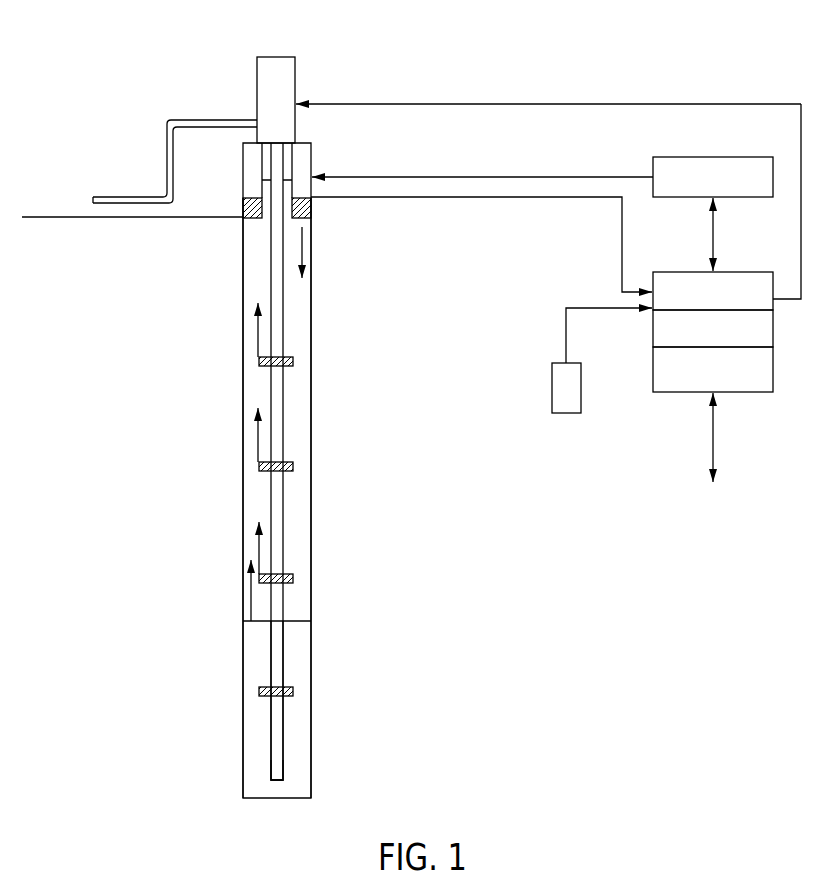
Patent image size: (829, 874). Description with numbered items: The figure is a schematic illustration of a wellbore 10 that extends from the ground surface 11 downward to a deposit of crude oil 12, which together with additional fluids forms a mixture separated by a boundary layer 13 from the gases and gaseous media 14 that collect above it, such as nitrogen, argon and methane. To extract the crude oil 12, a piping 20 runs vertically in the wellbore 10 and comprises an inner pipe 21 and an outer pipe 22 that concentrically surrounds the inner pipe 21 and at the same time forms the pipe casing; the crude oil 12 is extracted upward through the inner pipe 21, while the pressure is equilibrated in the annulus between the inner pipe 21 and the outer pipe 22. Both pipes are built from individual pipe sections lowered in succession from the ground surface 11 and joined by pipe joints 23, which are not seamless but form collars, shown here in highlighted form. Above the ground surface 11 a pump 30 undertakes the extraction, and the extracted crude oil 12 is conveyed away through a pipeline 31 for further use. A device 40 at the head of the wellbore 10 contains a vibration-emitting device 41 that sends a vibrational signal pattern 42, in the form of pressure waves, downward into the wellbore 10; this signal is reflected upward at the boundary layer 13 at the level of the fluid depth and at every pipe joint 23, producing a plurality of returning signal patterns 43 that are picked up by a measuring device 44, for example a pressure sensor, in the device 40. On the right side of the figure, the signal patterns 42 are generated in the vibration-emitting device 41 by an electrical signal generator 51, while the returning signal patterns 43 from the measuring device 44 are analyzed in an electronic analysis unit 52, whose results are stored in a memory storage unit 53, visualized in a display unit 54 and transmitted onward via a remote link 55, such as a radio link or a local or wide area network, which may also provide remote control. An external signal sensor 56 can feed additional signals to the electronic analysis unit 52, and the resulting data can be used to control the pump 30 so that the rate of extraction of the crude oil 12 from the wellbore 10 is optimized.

The wellbore 10 is at (178, 690).
The ground surface 11 is at (58, 216).
The crude oil 12 is at (291, 722).
The boundary layer 13 is at (313, 618).
The gases and gaseous media 14 is at (242, 490).
The piping 20 is at (268, 763).
The inner pipe 21 is at (290, 490).
The outer pipe 22 is at (313, 522).
The pipe joints 23 is at (297, 357).
The pump 30 is at (277, 80).
The pipeline 31 is at (132, 193).
The device 40 is at (238, 187).
The vibration-emitting device 41 is at (313, 148).
The signal pattern 42 is at (307, 245).
The returning signal patterns 43 is at (258, 443).
The measuring device 44 is at (257, 163).
The electrical signal generator 51 is at (722, 188).
The electronic analysis unit 52 is at (722, 303).
The memory storage unit 53 is at (722, 340).
The display unit 54 is at (722, 381).
The remote link 55 is at (712, 451).
The external signal sensor 56 is at (575, 399).